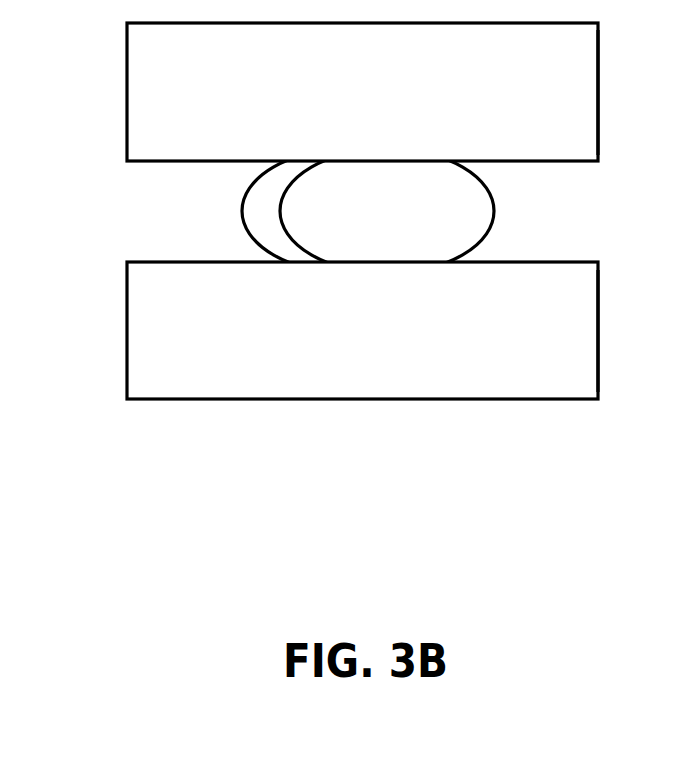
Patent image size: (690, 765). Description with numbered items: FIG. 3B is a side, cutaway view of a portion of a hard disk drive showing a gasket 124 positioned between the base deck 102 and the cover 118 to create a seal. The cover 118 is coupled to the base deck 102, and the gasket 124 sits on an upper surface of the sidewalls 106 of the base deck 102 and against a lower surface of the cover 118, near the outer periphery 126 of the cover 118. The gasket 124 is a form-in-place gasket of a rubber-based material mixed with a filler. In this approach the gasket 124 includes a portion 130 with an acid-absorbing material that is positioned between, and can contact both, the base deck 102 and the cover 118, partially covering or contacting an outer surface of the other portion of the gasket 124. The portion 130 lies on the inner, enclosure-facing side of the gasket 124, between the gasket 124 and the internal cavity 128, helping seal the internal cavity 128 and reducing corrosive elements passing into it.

The base deck 102 is at (395, 346).
The sidewalls 106 is at (583, 307).
The cover 118 is at (395, 104).
The gasket 124 is at (414, 226).
The outer periphery 126 is at (598, 86).
The internal cavity 128 is at (96, 216).
The portion with acid-absorbing material 130 is at (243, 203).